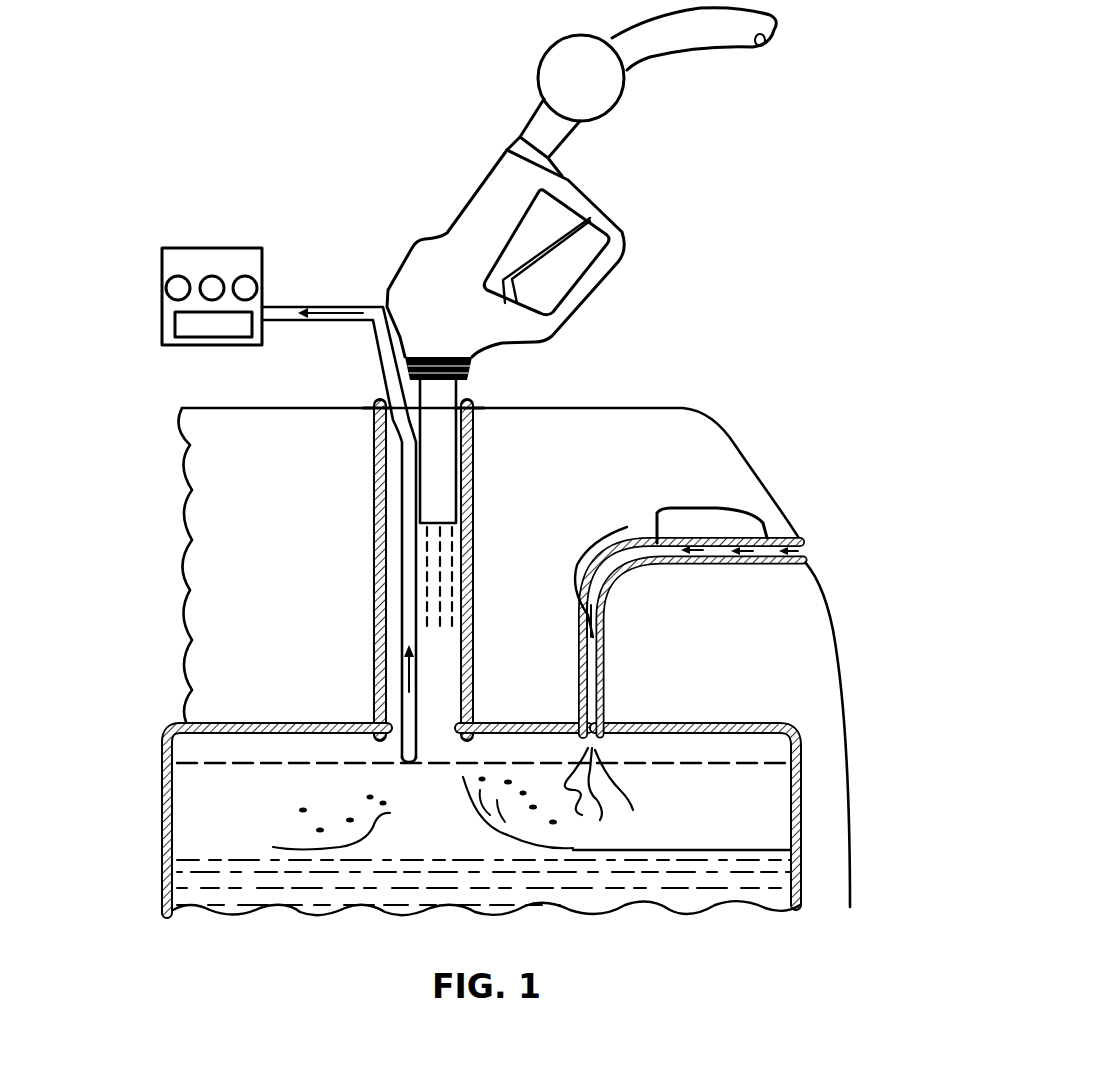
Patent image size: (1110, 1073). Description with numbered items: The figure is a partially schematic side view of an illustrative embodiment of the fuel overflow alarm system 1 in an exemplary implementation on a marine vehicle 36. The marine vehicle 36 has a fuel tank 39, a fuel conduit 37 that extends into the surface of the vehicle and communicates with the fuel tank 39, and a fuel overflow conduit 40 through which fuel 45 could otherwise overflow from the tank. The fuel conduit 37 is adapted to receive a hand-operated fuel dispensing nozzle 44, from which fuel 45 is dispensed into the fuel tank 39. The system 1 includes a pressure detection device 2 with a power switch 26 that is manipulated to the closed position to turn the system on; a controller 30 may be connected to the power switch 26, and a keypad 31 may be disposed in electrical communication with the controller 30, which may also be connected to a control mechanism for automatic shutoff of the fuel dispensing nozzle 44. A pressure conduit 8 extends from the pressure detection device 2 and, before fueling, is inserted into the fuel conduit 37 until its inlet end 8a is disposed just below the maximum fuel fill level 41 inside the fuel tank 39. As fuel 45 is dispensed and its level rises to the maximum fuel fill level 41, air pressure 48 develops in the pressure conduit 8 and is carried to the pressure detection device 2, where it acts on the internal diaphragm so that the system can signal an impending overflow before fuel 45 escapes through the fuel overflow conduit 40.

The fuel overflow alarm system 1 is at (188, 152).
The pressure detection device 2 is at (337, 290).
The pressure conduit 8 is at (385, 353).
The inlet end 8a is at (413, 765).
The power switch 26 is at (215, 327).
The controller 30 is at (253, 252).
The keypad 31 is at (172, 285).
The marine vehicle 36 is at (758, 460).
The fuel conduit 37 is at (382, 640).
The fuel tank 39 is at (160, 833).
The fuel overflow conduit 40 is at (633, 577).
The maximum fuel fill level 41 is at (278, 765).
The fuel dispensing nozzle 44 is at (478, 202).
The fuel 45 is at (657, 515).
The air pressure 48 is at (322, 320).